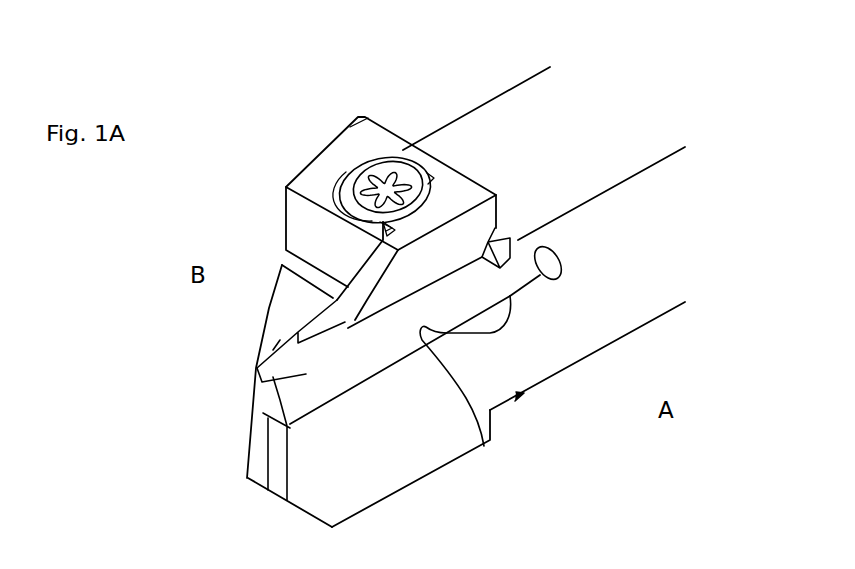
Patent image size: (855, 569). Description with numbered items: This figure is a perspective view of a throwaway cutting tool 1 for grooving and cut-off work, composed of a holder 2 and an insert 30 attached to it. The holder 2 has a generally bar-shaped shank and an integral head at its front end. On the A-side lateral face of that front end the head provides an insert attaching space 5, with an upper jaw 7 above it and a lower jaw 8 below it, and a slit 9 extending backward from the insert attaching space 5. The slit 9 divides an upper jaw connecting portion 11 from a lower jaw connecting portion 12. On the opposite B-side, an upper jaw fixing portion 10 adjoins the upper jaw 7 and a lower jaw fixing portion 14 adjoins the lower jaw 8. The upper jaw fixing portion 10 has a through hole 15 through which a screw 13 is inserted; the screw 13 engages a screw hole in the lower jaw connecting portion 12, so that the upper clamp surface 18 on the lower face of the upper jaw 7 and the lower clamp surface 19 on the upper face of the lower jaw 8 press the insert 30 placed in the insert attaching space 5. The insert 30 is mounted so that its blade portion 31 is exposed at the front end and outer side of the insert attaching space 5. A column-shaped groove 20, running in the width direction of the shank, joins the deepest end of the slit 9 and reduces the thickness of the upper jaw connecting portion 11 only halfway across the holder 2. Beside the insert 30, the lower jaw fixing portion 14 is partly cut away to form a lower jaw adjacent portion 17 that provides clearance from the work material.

The cutting tool 1 is at (658, 117).
The holder 2 is at (500, 94).
The insert attaching space 5 is at (490, 410).
The upper jaw 7 is at (370, 272).
The lower jaw 8 is at (357, 497).
The slit 9 is at (538, 280).
The upper jaw fixing portion 10 is at (320, 183).
The upper jaw connecting portion 11 is at (525, 252).
The lower jaw connecting portion 12 is at (543, 327).
The screw 13 is at (400, 170).
The lower jaw fixing portion 14 is at (259, 451).
The through hole 15 is at (358, 172).
The lower jaw adjacent portion 17 is at (387, 398).
The upper clamp surface 18 is at (380, 310).
The lower clamp surface 19 is at (364, 384).
The column-shaped groove 20 is at (557, 258).
The insert 30 is at (288, 455).
The blade portion 31 is at (276, 370).